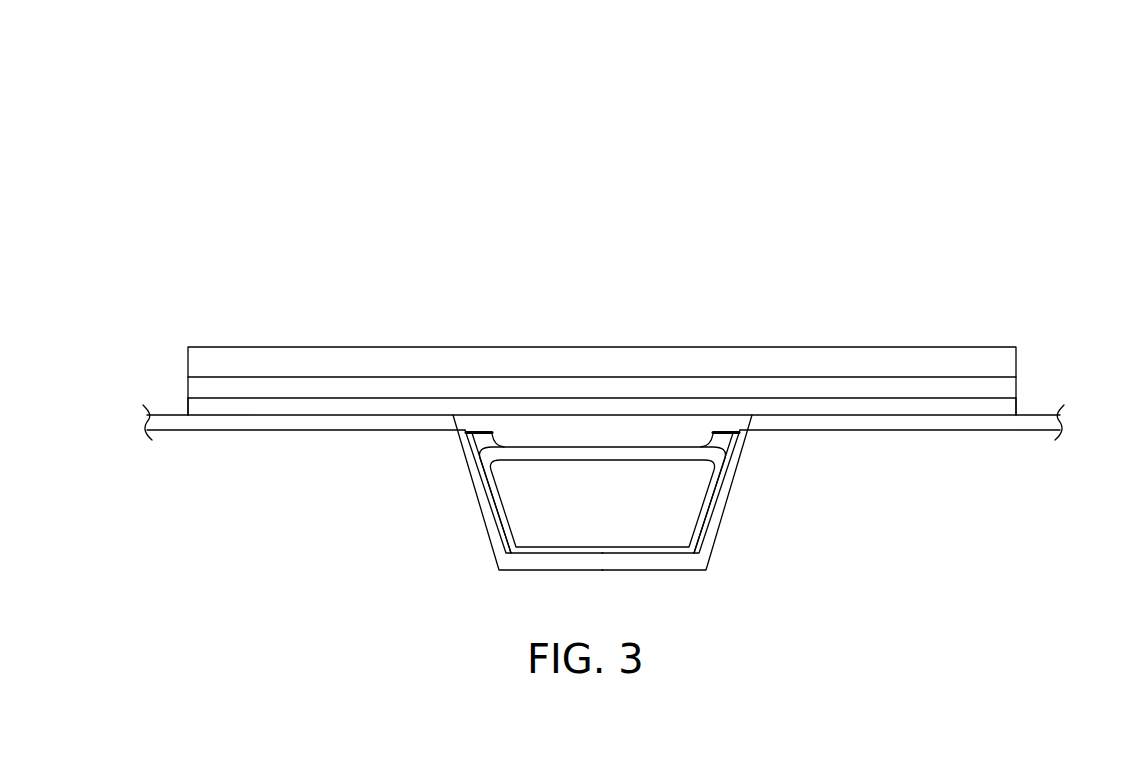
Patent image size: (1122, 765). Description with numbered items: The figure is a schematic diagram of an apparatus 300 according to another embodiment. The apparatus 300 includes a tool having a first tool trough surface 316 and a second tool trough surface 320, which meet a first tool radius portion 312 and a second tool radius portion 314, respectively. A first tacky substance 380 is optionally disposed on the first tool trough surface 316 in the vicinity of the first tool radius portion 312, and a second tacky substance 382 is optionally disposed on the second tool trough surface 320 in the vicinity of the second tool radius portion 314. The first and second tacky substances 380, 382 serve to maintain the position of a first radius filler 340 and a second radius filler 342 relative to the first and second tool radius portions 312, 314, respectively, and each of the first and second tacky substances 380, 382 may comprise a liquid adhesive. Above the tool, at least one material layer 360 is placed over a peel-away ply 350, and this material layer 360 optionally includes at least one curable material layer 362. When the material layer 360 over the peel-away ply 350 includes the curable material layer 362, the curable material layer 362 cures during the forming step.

The apparatus 300 is at (124, 158).
The first tool radius portion 312 is at (452, 431).
The second tool radius portion 314 is at (754, 430).
The first tool trough surface 316 is at (494, 517).
The second tool trough surface 320 is at (711, 517).
The first radius filler 340 is at (487, 445).
The second radius filler 342 is at (718, 445).
The peel-away ply 350 is at (188, 401).
The material layer 360 is at (188, 352).
The curable material layer 362 is at (188, 378).
The first tacky substance 380 is at (471, 447).
The second tacky substance 382 is at (735, 449).